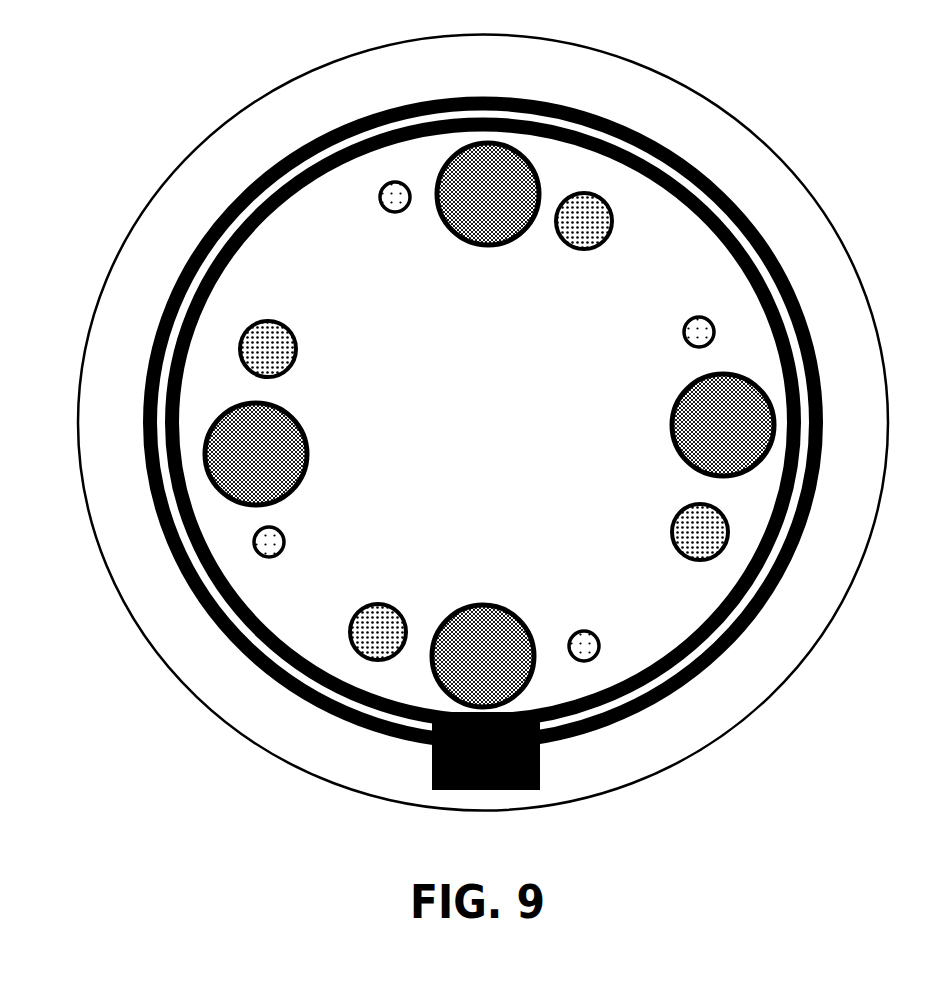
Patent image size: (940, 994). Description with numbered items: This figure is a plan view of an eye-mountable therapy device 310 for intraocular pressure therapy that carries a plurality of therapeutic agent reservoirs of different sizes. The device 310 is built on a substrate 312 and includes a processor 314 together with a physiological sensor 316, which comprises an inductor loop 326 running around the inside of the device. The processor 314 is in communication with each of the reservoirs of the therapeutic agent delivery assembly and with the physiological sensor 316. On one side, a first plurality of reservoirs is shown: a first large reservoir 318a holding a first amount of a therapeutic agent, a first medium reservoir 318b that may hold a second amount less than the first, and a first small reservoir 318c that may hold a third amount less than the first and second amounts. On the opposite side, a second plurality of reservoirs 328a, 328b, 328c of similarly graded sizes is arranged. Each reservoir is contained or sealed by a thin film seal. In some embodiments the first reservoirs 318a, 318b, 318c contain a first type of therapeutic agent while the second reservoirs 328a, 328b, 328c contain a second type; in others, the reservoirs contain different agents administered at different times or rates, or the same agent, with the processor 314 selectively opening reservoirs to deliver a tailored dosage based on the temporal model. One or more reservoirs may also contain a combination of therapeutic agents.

The eye-mountable therapy device 310 is at (835, 136).
The substrate 312 is at (849, 252).
The processor 314 is at (541, 770).
The physiological sensor 316 is at (265, 153).
The inductor loop 326 is at (612, 118).
The first large reservoir 318a is at (308, 452).
The first medium reservoir 318b is at (298, 343).
The first small reservoir 318c is at (285, 538).
The second large reservoir 328a is at (670, 420).
The second medium reservoir 328b is at (670, 531).
The second small reservoir 328c is at (683, 332).